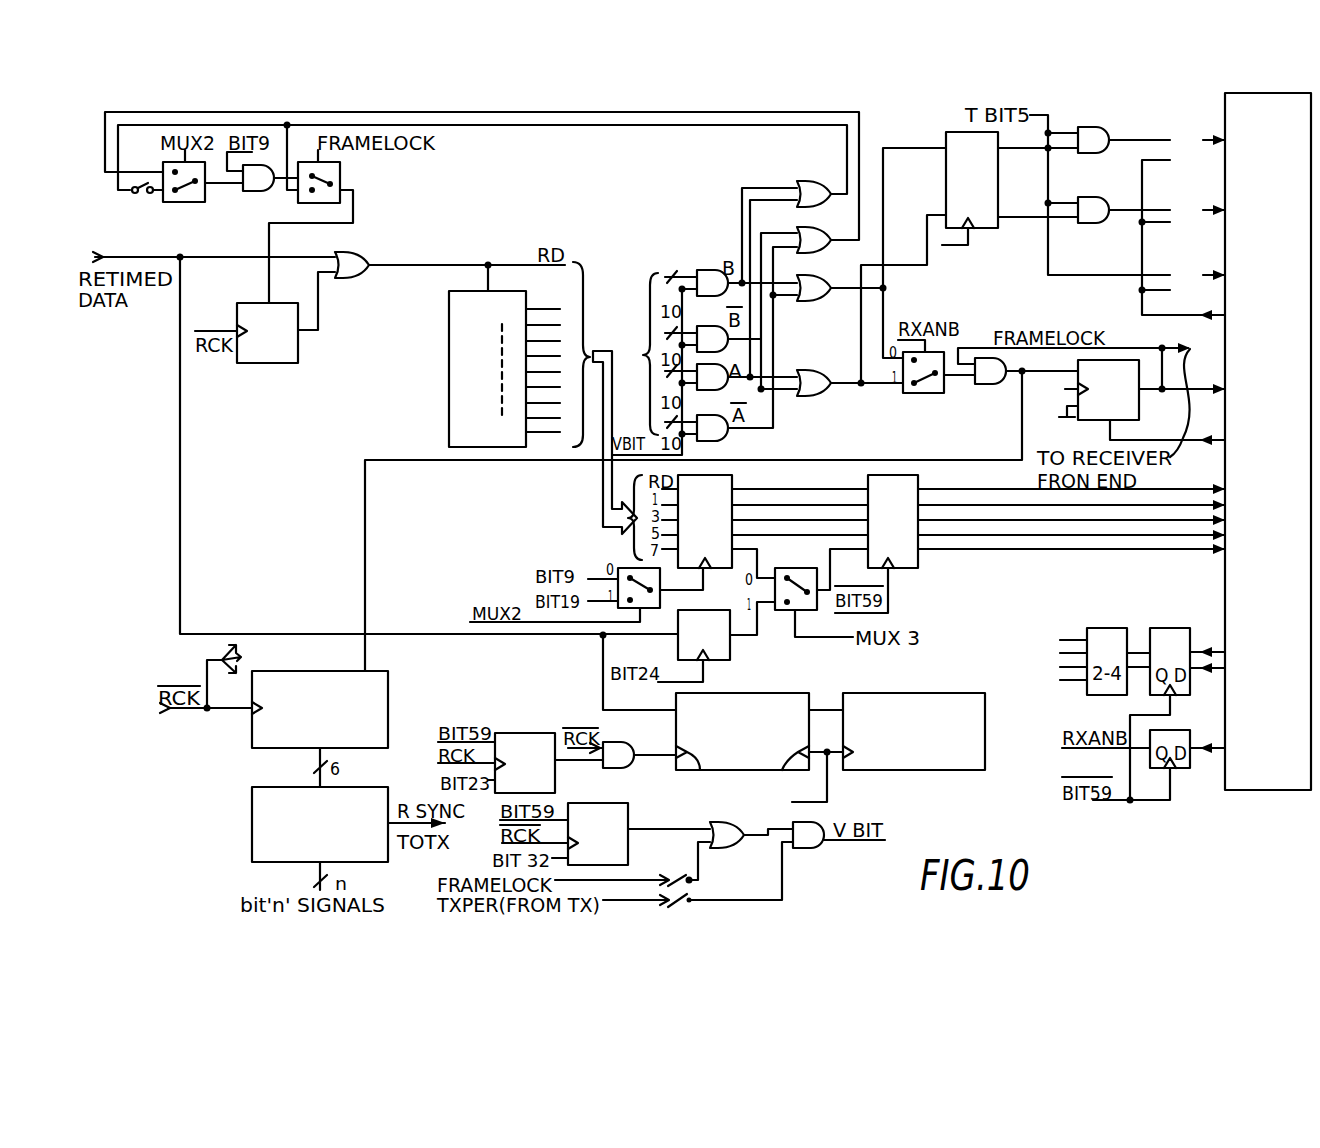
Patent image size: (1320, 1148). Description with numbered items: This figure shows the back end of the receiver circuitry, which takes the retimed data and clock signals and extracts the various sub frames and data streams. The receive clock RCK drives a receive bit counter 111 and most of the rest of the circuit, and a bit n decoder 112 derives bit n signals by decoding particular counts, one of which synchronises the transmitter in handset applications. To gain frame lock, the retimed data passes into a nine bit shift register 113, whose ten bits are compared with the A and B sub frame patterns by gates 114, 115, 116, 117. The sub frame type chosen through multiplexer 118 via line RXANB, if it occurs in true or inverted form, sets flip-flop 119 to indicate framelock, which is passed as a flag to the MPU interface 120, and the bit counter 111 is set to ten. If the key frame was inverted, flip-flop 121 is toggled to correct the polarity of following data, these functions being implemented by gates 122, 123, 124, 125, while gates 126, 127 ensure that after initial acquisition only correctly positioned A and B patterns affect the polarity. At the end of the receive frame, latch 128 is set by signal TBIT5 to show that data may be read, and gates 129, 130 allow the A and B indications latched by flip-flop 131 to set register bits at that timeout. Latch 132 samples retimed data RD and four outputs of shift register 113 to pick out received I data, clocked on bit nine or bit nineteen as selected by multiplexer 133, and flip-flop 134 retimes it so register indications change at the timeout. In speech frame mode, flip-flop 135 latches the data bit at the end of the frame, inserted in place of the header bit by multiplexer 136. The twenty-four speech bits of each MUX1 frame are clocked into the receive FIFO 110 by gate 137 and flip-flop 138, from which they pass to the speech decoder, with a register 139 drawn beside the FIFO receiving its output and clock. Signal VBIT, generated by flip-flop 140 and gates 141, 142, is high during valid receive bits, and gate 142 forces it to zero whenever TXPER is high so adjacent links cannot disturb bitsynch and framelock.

The receive FIFO 110 is at (817, 690).
The receive bit counter 111 is at (375, 712).
The bit n decoder 112 is at (262, 798).
The 9 bit shift register 113 is at (460, 397).
The gate 114 is at (697, 277).
The gate 115 is at (712, 273).
The gate 116 is at (710, 383).
The gate 117 is at (728, 428).
The multiplexer 118 is at (932, 390).
The flip-flop 119 is at (1075, 375).
The MPU interface 120 is at (1282, 778).
The flip-flop 121 is at (282, 353).
The gate 122 is at (812, 182).
The gate 123 is at (795, 232).
The gate 124 is at (138, 196).
The gate 125 is at (198, 190).
The gate 126 is at (707, 612).
The gate 127 is at (340, 177).
The latch 128 is at (1170, 293).
The gate 129 is at (1095, 147).
The gate 130 is at (1097, 213).
The flip-flop 131 is at (987, 217).
The latch 132 is at (708, 498).
The multiplexer 133 is at (630, 570).
The flip-flop 134 is at (898, 492).
The flip-flop 135 is at (730, 652).
The multiplexer 136 is at (803, 603).
The gate 137 is at (620, 745).
The flip-flop 138 is at (535, 733).
The output register 139 is at (937, 690).
The flip-flop 140 is at (603, 808).
The gate 141 is at (730, 843).
The gate 142 is at (818, 843).